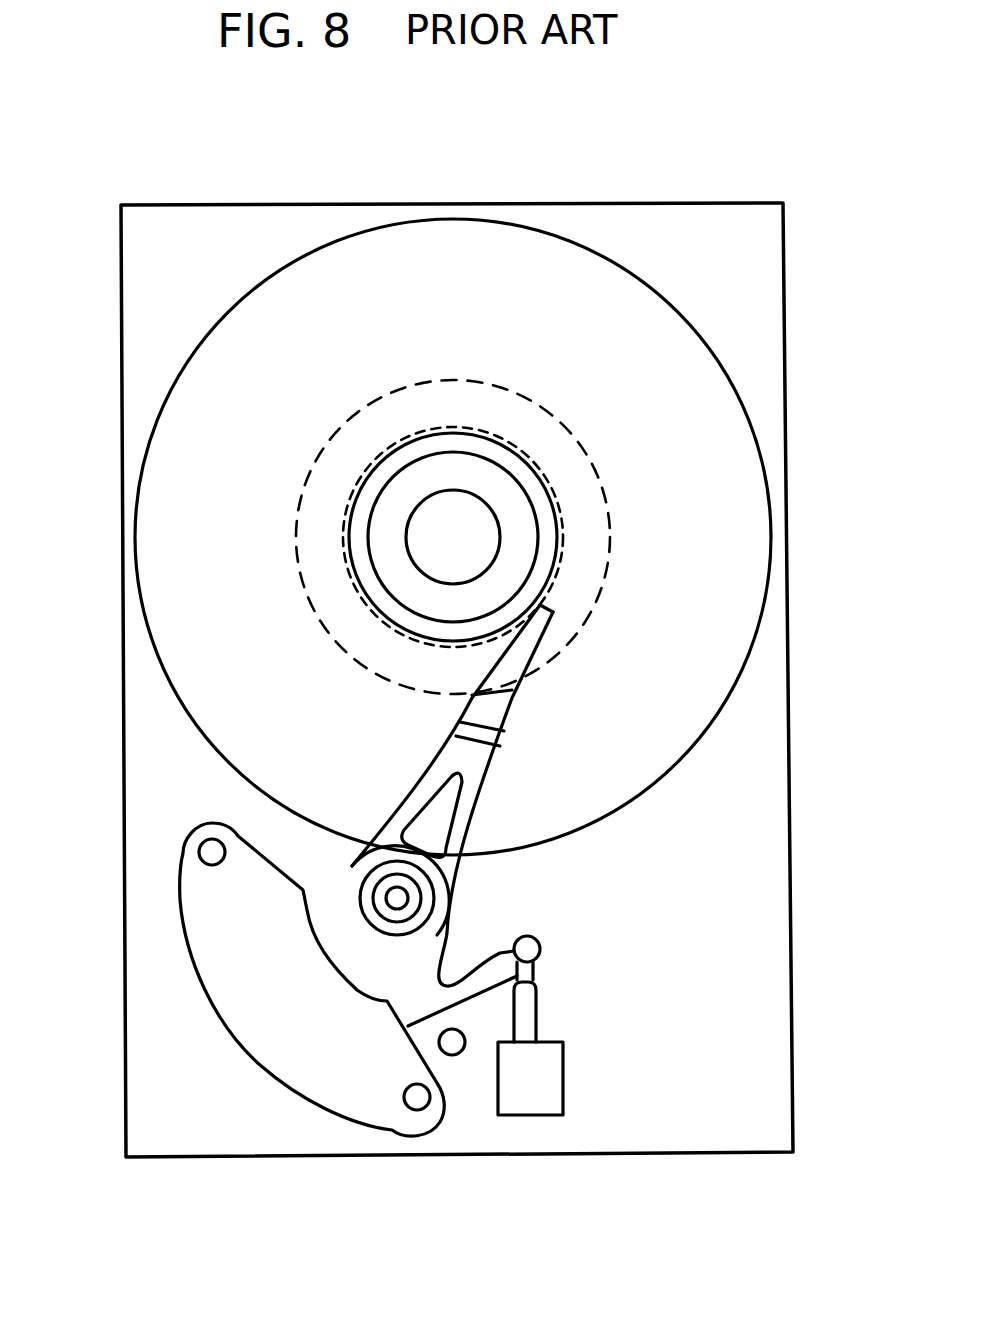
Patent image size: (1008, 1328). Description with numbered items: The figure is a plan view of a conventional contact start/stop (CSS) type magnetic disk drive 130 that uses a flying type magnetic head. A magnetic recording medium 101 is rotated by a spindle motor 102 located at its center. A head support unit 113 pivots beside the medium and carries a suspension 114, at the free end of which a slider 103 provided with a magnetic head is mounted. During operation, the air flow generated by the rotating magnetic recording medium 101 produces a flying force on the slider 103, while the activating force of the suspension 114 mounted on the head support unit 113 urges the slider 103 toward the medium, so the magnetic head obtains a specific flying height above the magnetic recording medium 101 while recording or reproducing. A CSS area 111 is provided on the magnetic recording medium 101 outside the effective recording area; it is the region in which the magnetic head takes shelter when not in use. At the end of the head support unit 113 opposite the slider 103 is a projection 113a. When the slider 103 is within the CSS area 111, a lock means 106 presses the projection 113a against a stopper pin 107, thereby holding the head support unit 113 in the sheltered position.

The CSS type magnetic disk drive 130 is at (97, 152).
The magnetic recording medium 101 is at (686, 312).
The spindle motor 102 is at (453, 476).
The CSS area 111 is at (499, 433).
The slider 103 is at (556, 609).
The suspension 114 is at (508, 692).
The head support unit 113 is at (463, 818).
The projection 113a is at (524, 979).
The stopper pin 107 is at (541, 950).
The lock means 106 is at (540, 1105).